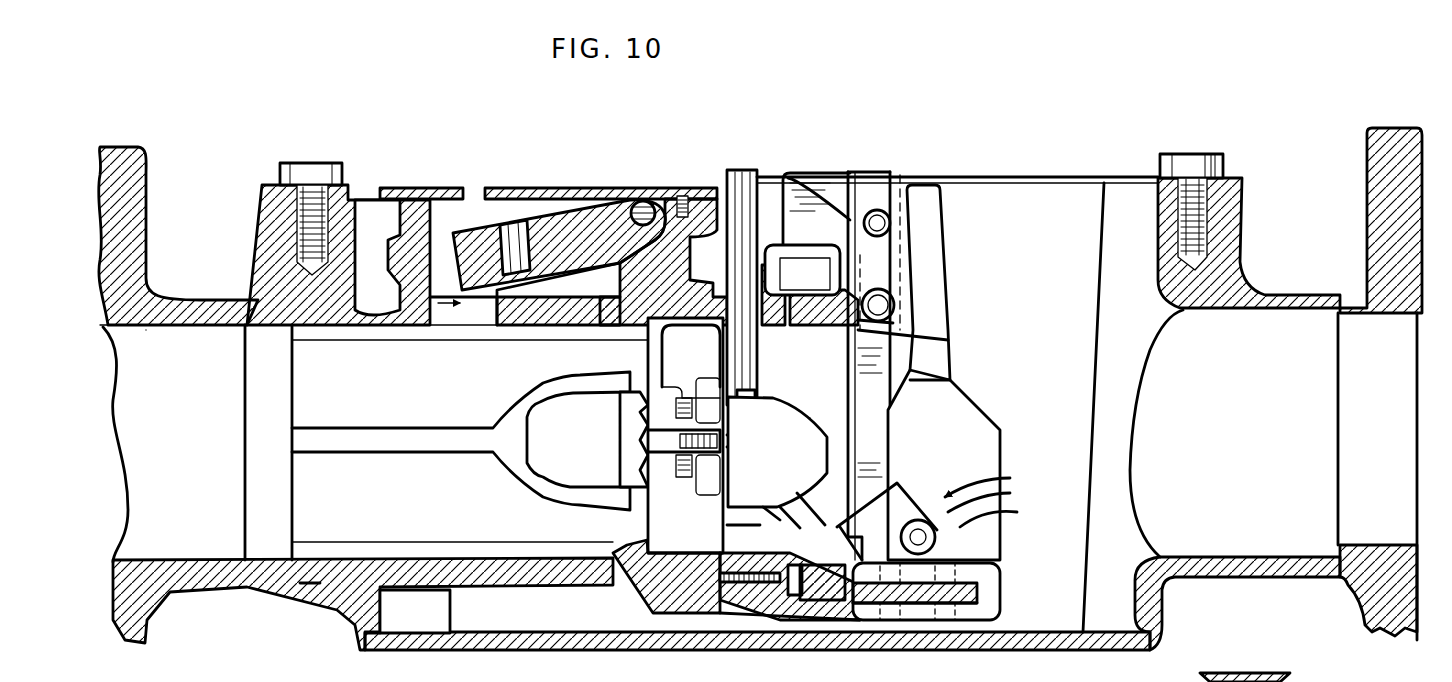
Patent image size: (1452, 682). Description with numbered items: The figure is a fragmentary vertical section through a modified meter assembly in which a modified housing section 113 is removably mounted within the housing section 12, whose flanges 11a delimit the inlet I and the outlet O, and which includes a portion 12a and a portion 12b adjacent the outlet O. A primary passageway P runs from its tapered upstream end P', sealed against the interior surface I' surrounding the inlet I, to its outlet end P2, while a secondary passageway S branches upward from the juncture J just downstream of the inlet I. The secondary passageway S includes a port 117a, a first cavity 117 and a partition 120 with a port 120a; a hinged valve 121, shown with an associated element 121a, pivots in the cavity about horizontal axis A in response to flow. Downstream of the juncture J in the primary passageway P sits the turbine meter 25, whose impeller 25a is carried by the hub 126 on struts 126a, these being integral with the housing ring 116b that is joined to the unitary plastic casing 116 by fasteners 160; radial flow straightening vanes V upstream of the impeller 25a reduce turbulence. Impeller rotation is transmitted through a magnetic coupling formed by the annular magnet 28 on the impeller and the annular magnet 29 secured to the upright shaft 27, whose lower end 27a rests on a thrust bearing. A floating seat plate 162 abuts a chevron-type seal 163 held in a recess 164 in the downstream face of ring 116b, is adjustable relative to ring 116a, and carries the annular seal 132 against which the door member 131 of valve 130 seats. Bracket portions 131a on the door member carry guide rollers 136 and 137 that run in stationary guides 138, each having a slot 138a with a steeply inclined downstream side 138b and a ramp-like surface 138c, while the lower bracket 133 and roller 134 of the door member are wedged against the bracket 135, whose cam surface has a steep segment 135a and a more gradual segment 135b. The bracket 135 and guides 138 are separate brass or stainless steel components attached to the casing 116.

The flange 11a is at (139, 147).
The housing section 12 is at (157, 277).
The body flange portion 12a is at (1157, 200).
The portion of housing section 12b is at (1080, 373).
The modified housing section 113 is at (1078, 133).
The casing 116 is at (367, 183).
The ring 116a is at (327, 583).
The housing ring 116b is at (743, 607).
The first cavity 117 is at (588, 293).
The port 117a is at (480, 318).
The partition 120 is at (437, 183).
The port 120a is at (557, 188).
The hinged valve 121 is at (557, 230).
The seal insert 121a is at (513, 227).
The meter 25 is at (673, 545).
The impeller 25a is at (710, 535).
The shaft 27 is at (732, 165).
The lower end of shaft 27a is at (740, 350).
The annular magnet 28 is at (642, 392).
The annular magnet 29 is at (753, 393).
The hub 126 is at (778, 486).
The struts 126a is at (808, 526).
The valve 130 is at (1000, 499).
The door member 131 is at (877, 452).
The bracket portions 131a is at (933, 307).
The annular seal 132 is at (893, 340).
The bracket 133 is at (997, 483).
The slide roller 134 is at (1008, 516).
The bracket 135 is at (990, 593).
The steeply inclined cam segment 135a is at (940, 580).
The gradual inclined cam segment 135b is at (957, 523).
The guide rollers 136 is at (880, 303).
The guide rollers 137 is at (877, 223).
The stationary guides 138 is at (830, 236).
The slot 138a is at (905, 170).
The downstream side of slot 138b is at (940, 240).
The ramp-like surface 138c is at (820, 172).
The fasteners 160 is at (727, 587).
The floating seat plate 162 is at (857, 587).
The chevron-type annular seal 163 is at (830, 570).
The recess 164 is at (790, 533).
The horizontal axis A is at (637, 202).
The secondary passageway S is at (407, 287).
The juncture J is at (420, 340).
The inlet I is at (159, 375).
The outlet O is at (1380, 446).
The flow straightening vanes V is at (310, 480).
The primary passageway P is at (517, 580).
The upstream end of primary passageway P' is at (264, 612).
The interior surface I' is at (233, 594).
The outlet end of passageway P2 is at (887, 500).